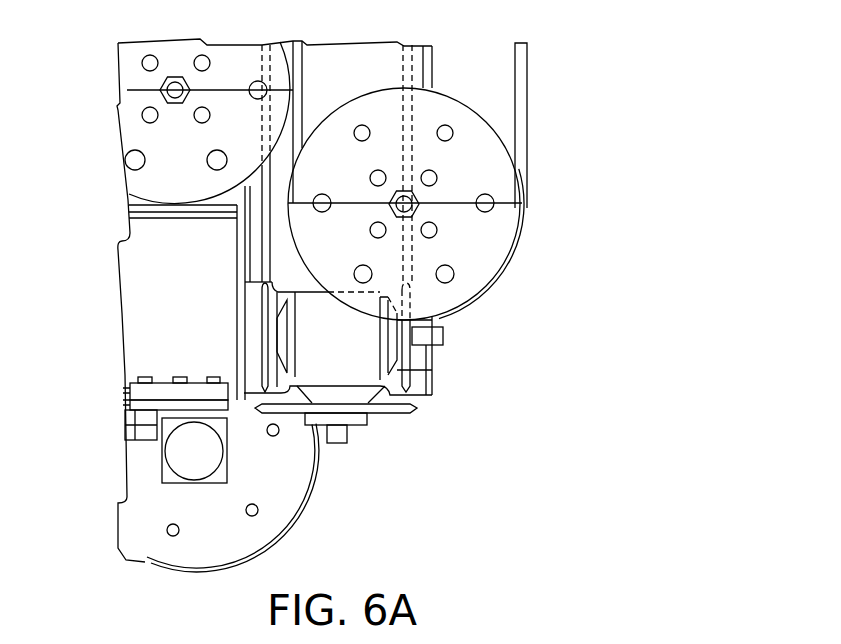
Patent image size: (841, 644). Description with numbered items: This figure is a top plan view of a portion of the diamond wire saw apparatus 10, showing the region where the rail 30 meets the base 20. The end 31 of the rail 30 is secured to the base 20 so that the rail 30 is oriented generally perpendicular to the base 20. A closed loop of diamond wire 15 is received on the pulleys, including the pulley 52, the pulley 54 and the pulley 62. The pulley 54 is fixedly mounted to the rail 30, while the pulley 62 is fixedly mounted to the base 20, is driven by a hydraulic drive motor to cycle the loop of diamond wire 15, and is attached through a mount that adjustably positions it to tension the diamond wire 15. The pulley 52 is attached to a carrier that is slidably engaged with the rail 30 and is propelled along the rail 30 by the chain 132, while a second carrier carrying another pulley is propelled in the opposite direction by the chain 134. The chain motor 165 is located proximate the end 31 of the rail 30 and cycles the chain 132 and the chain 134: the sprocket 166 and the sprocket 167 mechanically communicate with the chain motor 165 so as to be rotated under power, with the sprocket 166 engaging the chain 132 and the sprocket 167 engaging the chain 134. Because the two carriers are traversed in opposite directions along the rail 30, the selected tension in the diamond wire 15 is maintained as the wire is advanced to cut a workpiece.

The diamond wire saw apparatus 10 is at (656, 105).
The diamond wire 15 is at (518, 90).
The base 20 is at (145, 303).
The rail 30 is at (433, 67).
The end of rail 31 is at (430, 396).
The pulley 52 is at (142, 131).
The pulley 54 is at (502, 176).
The pulley 62 is at (285, 503).
The chain 132 is at (266, 256).
The chain 134 is at (408, 273).
The chain motor 165 is at (348, 352).
The sprocket 166 is at (265, 307).
The sprocket 167 is at (412, 370).